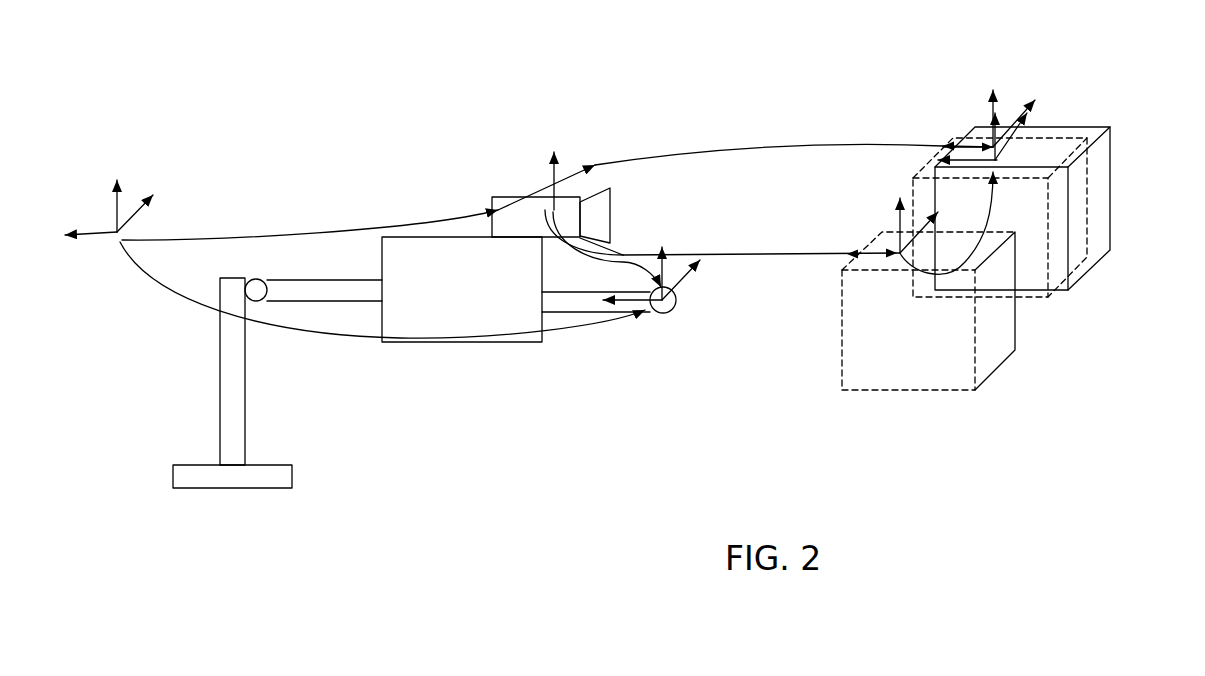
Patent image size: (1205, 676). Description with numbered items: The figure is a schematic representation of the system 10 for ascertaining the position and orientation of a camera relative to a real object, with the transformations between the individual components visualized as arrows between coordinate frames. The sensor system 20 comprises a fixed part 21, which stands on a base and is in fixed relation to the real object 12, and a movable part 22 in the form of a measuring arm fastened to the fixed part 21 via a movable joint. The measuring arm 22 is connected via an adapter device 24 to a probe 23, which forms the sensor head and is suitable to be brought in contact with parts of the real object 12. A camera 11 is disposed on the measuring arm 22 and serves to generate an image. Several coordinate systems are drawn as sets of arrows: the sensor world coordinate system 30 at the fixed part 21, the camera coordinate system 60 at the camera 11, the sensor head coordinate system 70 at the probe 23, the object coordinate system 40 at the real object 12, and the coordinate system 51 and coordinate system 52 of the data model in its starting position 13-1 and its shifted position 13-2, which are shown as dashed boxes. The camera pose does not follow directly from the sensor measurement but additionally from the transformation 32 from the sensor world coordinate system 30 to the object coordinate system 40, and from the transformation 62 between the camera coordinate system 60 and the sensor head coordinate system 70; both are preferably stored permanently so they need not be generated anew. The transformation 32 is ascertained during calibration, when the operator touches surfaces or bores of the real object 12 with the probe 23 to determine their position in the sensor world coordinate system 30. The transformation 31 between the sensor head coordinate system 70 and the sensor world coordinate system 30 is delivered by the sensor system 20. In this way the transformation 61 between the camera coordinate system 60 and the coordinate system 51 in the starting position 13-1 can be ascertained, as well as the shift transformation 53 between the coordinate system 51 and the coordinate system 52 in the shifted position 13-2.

The system 10 is at (330, 92).
The camera 11 is at (498, 192).
The real object 12 is at (1097, 260).
The starting position 13-1 is at (1000, 368).
The shifted position 13-2 is at (1037, 302).
The sensor system 20 is at (218, 364).
The fixed part 21 is at (245, 443).
The movable part 22 is at (336, 273).
The probe 23 is at (663, 317).
The adapter device 24 is at (472, 330).
The sensor world coordinate system 30 is at (100, 238).
The transformation 31 is at (352, 338).
The transformation 32 is at (703, 152).
The object coordinate system 40 is at (1003, 96).
The coordinate system of the data model 51 is at (892, 232).
The coordinate system of the data model 52 is at (1033, 145).
The shift transformation 53 is at (993, 208).
The camera coordinate system 60 is at (548, 172).
The transformation 61 is at (788, 248).
The transformation 62 is at (623, 250).
The sensor head coordinate system 70 is at (687, 280).